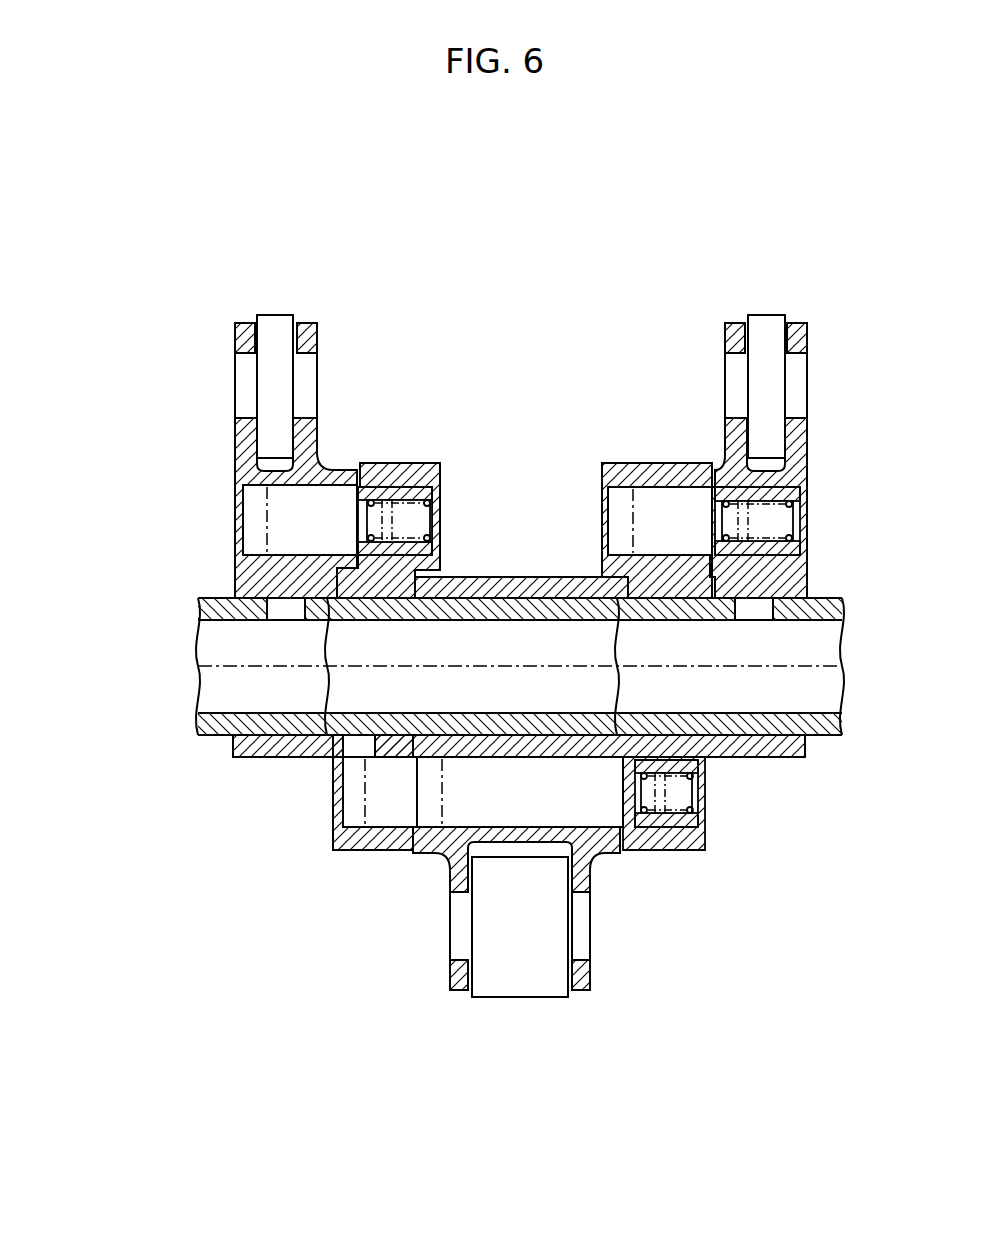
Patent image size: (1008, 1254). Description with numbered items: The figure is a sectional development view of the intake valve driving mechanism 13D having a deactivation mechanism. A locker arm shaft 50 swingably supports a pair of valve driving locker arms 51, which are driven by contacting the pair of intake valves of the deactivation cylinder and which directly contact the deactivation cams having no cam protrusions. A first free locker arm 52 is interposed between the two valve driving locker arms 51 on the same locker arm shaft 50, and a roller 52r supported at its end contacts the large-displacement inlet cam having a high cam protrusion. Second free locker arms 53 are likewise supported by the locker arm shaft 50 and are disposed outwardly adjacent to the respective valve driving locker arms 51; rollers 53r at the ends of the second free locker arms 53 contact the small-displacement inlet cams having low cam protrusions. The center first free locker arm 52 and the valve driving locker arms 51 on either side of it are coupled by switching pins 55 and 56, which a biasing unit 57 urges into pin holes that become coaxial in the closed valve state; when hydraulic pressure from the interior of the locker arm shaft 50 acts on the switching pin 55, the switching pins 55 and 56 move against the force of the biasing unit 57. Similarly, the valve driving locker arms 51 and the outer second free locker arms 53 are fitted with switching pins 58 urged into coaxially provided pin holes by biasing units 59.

The intake valve driving mechanism having a deactivation mechanism 13D is at (212, 342).
The locker arm shaft 50 is at (210, 592).
The valve driving locker arm 51 is at (398, 463).
The first free locker arm 52 is at (524, 577).
The roller 52r is at (517, 999).
The second free locker arm 53 is at (270, 758).
The roller 53r is at (280, 313).
The switching pin 55 is at (380, 808).
The switching pin 56 is at (487, 790).
The biasing unit 57 is at (660, 824).
The switching pin 58 is at (308, 512).
The biasing unit 59 is at (416, 484).